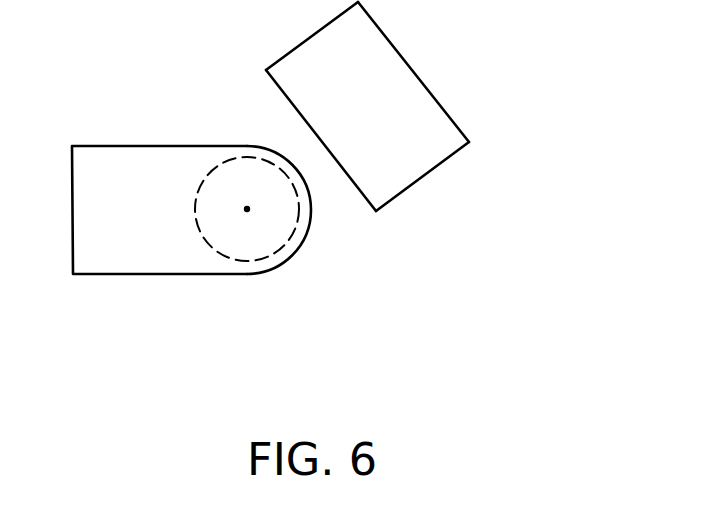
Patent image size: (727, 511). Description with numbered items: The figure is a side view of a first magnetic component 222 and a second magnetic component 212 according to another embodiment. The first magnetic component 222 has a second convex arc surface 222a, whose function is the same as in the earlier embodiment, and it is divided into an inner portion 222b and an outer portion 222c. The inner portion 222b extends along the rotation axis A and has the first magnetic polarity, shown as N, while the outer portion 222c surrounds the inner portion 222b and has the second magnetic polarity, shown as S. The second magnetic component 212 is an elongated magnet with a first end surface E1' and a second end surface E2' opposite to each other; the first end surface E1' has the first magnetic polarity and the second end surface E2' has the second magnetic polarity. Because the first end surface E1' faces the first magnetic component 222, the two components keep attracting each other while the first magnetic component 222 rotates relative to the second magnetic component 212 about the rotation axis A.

The second magnetic component 212 is at (456, 51).
The first magnetic component 222 is at (207, 288).
The second convex arc surface 222a is at (287, 155).
The inner portion 222b is at (242, 245).
The outer portion 222c is at (202, 163).
The rotation axis A is at (247, 209).
The first end surface E1' is at (324, 187).
The second end surface E2' is at (450, 72).